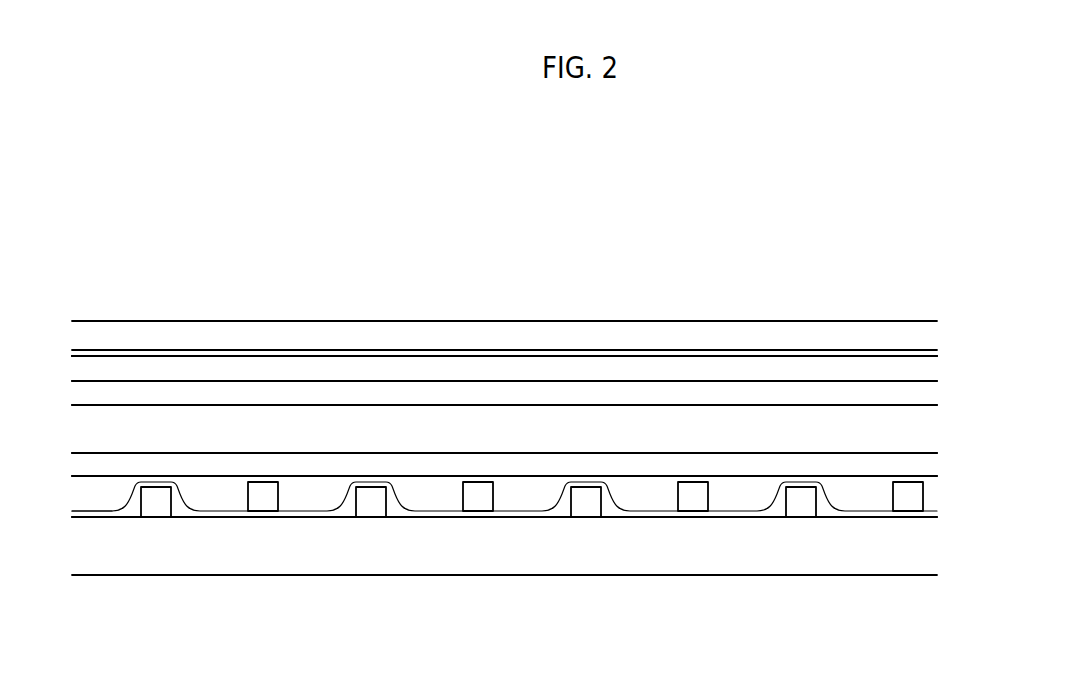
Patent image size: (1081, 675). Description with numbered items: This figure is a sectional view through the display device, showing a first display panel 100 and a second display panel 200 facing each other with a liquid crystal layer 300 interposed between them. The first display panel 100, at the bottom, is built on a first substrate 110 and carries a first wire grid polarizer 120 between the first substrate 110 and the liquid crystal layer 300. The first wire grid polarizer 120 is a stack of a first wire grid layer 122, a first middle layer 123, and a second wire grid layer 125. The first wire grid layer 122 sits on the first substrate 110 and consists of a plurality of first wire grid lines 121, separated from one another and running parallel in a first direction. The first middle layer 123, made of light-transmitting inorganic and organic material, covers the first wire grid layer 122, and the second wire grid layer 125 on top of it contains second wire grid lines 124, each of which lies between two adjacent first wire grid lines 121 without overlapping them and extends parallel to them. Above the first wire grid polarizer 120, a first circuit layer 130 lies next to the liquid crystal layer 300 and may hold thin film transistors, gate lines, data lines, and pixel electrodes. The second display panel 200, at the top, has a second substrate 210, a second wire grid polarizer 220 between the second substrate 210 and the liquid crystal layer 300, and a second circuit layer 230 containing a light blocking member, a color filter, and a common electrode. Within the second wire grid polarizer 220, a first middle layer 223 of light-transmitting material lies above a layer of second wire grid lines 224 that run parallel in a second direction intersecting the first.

The first display panel 100 is at (570, 451).
The first substrate 110 is at (545, 546).
The first wire grid polarizer 120 is at (945, 501).
The first wire grid lines 121 is at (838, 627).
The first wire grid layer 122 is at (486, 581).
The first middle layer 123 is at (92, 514).
The second wire grid lines 124 is at (933, 273).
The second wire grid layer 125 is at (590, 369).
The first circuit layer 130 is at (925, 462).
The second display panel 200 is at (572, 337).
The second substrate 210 is at (930, 334).
The second wire grid polarizer 220 is at (934, 371).
The first middle layer 223 is at (208, 352).
The second wire grid lines 224 is at (138, 367).
The second circuit layer 230 is at (930, 397).
The liquid crystal layer 300 is at (925, 430).